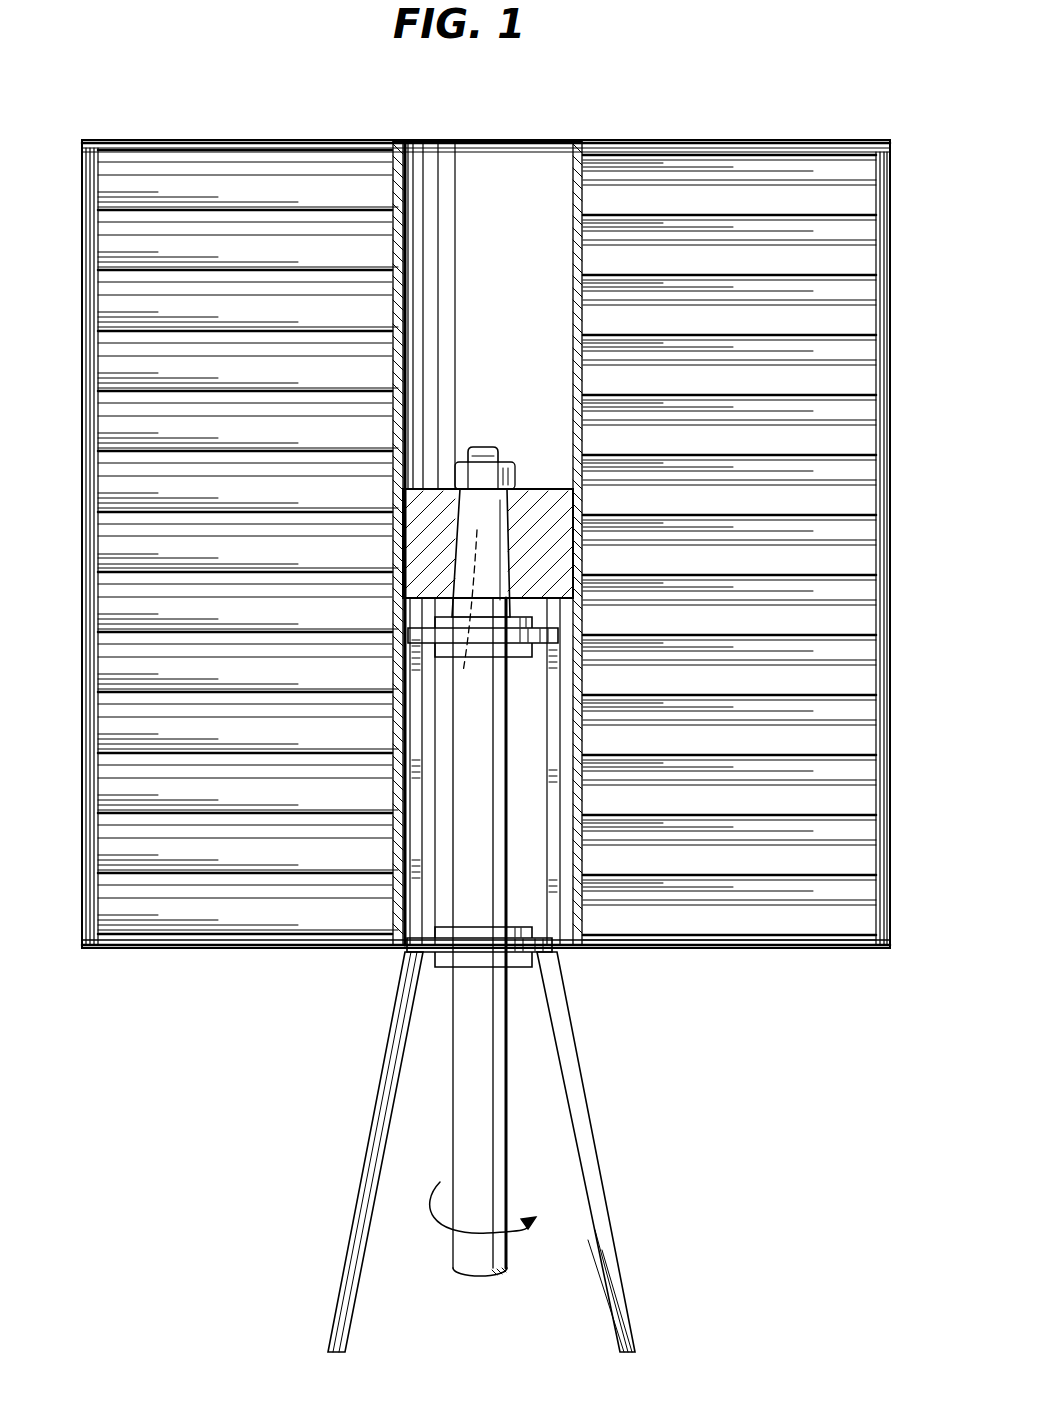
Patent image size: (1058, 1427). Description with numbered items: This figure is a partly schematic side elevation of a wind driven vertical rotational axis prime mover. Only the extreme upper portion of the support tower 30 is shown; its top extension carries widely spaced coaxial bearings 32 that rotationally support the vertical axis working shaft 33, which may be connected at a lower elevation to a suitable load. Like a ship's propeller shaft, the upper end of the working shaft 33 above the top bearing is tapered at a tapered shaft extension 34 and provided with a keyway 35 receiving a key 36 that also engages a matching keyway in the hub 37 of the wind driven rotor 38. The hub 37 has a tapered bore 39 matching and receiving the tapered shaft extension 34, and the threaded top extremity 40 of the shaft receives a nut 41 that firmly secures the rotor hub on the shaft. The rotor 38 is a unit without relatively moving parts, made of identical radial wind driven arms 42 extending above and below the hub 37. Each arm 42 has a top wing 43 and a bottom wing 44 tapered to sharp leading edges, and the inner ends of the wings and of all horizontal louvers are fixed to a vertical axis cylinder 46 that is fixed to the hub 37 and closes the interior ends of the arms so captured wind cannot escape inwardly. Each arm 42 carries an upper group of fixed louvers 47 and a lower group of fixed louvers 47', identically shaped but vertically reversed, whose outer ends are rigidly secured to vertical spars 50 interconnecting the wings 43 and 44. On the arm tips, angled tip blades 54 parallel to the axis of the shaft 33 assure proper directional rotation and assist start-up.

The support tower 30 is at (630, 1298).
The coaxial bearings 32 is at (520, 657).
The working shaft 33 is at (483, 1273).
The tapered shaft extension 34 is at (527, 560).
The keyway 35 is at (470, 616).
The key 36 is at (455, 520).
The hub 37 is at (430, 505).
The wind driven rotor 38 is at (588, 112).
The tapered bore 39 is at (500, 530).
The threaded top extremity 40 is at (485, 447).
The nut 41 is at (507, 458).
The radial wind driven arm 42 is at (136, 138).
The top blade or wing 43 is at (287, 142).
The bottom blade or wing 44 is at (205, 945).
The vertical axis cylinder 46 is at (573, 313).
The upper group of fixed louvers 47 is at (469, 517).
The lower group of fixed louvers 47' is at (487, 882).
The vertical spar 50 is at (888, 617).
The tip blade 54 is at (88, 738).